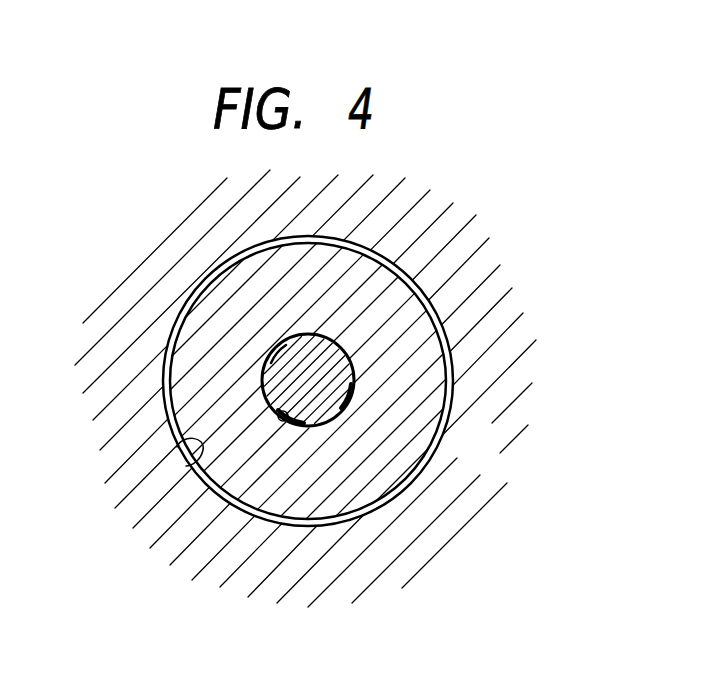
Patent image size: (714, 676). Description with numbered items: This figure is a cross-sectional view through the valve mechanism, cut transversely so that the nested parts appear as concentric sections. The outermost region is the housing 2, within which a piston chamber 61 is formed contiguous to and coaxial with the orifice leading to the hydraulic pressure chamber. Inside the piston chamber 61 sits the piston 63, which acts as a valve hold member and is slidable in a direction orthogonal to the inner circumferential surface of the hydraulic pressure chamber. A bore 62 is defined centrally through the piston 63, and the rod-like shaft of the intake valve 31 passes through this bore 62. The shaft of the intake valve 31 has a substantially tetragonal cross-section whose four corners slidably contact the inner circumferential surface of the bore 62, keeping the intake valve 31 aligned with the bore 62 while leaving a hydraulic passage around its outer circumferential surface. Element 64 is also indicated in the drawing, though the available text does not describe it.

The housing 2 is at (492, 459).
The piston 63 is at (388, 305).
The intake valve 31 is at (345, 400).
The inner coating layer 64 is at (268, 352).
The bore 62 is at (287, 423).
The piston chamber 61 is at (186, 462).